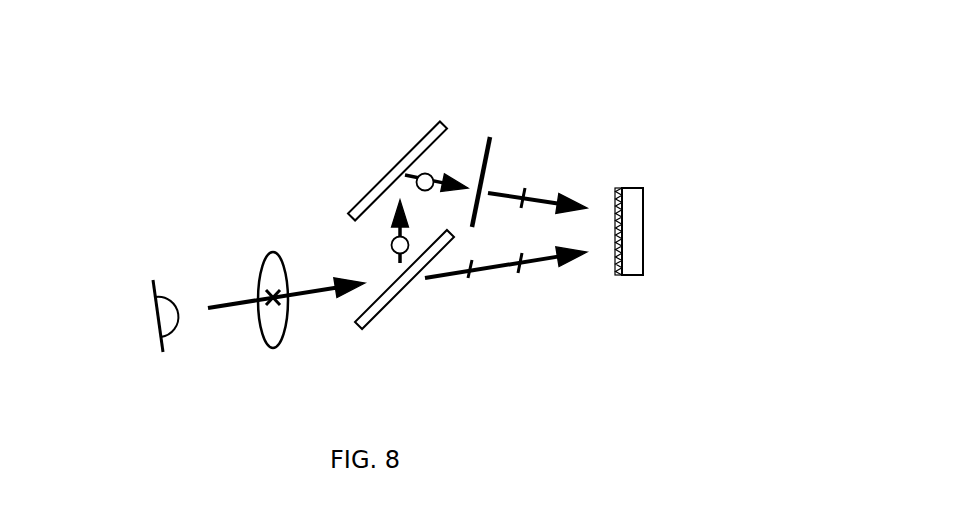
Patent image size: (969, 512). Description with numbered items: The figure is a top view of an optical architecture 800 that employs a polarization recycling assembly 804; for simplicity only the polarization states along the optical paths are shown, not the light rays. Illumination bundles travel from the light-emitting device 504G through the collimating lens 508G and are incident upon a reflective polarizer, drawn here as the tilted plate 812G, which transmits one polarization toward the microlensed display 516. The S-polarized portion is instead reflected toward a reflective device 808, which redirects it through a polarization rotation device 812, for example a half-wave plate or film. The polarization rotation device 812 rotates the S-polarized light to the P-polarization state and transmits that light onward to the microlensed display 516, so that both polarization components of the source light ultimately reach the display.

The optical architecture 800 is at (163, 114).
The light-emitting device 504G is at (157, 328).
The collimating lens 508G is at (282, 348).
The green beam splitter plate 812G is at (390, 312).
The reflective device 808 is at (412, 143).
The recycling assembly 804 is at (491, 80).
The polarization rotation device 812 is at (497, 147).
The microlensed display 516 is at (641, 168).